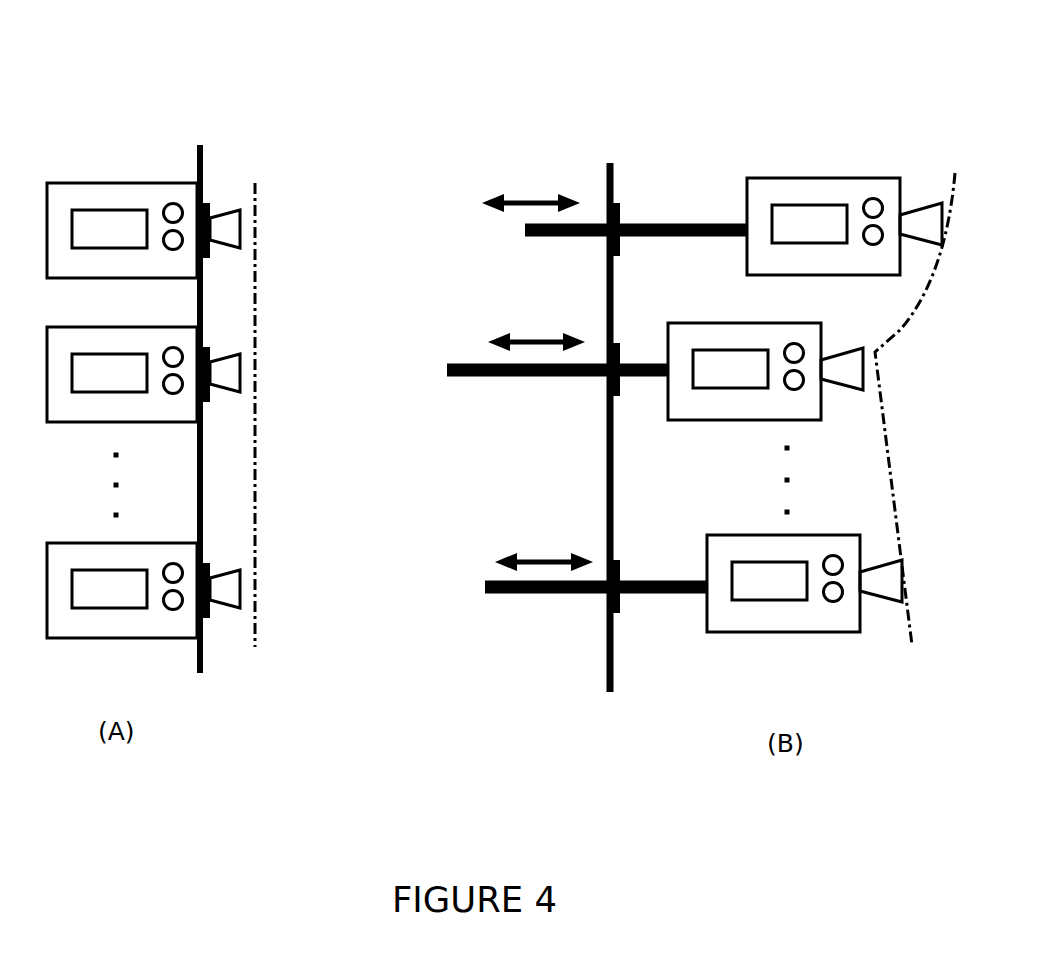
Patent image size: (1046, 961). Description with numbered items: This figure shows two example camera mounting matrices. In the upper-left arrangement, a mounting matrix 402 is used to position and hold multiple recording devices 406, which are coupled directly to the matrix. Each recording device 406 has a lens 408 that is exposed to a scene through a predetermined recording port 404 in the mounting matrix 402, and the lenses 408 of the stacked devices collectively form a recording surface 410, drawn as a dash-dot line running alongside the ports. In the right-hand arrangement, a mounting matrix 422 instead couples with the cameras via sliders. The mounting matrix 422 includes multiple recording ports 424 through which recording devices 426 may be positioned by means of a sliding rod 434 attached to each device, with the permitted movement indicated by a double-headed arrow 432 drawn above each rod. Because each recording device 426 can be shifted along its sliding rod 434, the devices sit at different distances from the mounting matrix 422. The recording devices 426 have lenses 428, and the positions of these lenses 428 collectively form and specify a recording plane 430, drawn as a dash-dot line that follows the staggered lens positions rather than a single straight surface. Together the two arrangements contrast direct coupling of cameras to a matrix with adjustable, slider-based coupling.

In FIG. 4A, the mounting matrix 402 is at (201, 145).
In FIG. 4A, the recording port 404 is at (205, 203).
In FIG. 4A, the recording device 406 is at (172, 182).
In FIG. 4A, the lens 408 is at (238, 230).
In FIG. 4A, the recording surface 410 is at (257, 418).
In FIG. 4B, the mounting matrix 422 is at (610, 162).
In FIG. 4B, the recording port 424 is at (615, 200).
In FIG. 4B, the recording device 426 is at (818, 178).
In FIG. 4B, the lens 428 is at (930, 205).
In FIG. 4B, the recording plane 430 is at (895, 457).
In FIG. 4B, the arrow 432 is at (518, 197).
In FIG. 4B, the sliding rod 434 is at (523, 230).